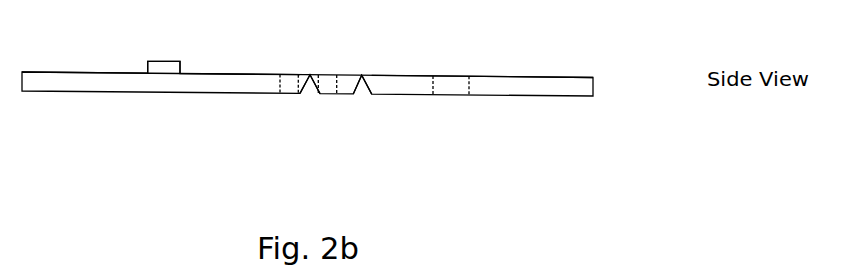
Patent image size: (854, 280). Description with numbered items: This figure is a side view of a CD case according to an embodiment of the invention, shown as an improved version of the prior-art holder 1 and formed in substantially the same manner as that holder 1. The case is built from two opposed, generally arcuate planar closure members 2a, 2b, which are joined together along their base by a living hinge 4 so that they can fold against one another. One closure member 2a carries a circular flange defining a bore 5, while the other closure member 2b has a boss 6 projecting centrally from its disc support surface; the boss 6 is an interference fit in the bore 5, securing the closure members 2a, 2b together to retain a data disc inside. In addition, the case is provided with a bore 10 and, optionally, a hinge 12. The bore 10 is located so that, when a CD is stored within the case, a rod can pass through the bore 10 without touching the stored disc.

The holder 1 is at (619, 50).
The closure member 2a is at (537, 77).
The closure member 2b is at (223, 74).
The living hinge 4 is at (310, 75).
The bore 5 is at (462, 76).
The boss 6 is at (182, 60).
The bore 10 is at (282, 98).
The hinge 12 is at (362, 75).